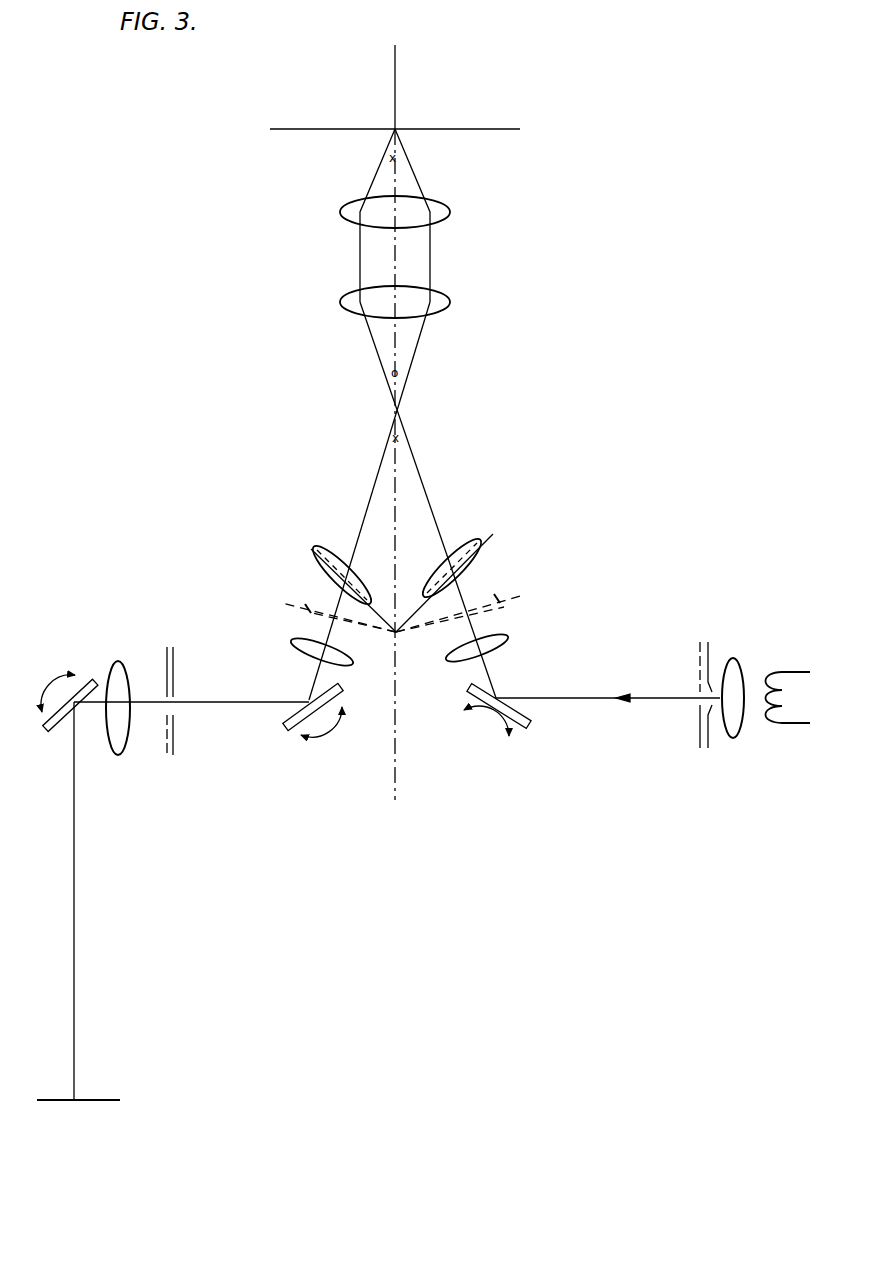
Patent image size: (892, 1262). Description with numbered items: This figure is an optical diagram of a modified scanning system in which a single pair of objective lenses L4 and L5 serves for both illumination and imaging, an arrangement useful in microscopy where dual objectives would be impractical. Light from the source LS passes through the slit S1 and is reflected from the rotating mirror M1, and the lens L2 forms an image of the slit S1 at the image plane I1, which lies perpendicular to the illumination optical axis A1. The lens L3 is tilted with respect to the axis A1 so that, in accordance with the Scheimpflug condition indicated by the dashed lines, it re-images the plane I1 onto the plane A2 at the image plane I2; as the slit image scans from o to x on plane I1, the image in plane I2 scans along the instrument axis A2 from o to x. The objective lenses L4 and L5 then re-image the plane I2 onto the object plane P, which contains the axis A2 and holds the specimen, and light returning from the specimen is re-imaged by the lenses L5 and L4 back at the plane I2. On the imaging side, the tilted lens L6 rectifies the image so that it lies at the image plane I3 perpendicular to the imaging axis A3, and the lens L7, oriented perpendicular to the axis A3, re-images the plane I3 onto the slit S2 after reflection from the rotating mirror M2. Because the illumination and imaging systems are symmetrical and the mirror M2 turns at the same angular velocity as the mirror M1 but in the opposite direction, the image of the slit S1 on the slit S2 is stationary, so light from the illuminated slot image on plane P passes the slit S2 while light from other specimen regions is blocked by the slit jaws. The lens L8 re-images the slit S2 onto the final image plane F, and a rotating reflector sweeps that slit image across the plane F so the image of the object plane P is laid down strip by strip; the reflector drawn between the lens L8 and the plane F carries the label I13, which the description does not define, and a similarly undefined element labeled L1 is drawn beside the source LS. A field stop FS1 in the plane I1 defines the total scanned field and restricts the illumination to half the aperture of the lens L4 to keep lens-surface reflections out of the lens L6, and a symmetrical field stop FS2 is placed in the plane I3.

The object plane P is at (401, 125).
The objective lens L5 is at (450, 207).
The objective lens L4 is at (450, 292).
The instrument axis A2 is at (386, 350).
The image plane I2 is at (404, 398).
The illumination optical axis A1 is at (420, 453).
The imaging axis A3 is at (362, 500).
The tilted lens L6 is at (325, 547).
The tilted lens L3 is at (482, 557).
The field stop FS2 is at (314, 598).
The field stop FS1 is at (496, 592).
The image plane I3 is at (306, 612).
The image plane I1 is at (504, 603).
The lens L7 is at (296, 635).
The lens L2 is at (514, 628).
The slit S2 is at (167, 697).
The slit S1 is at (697, 690).
The condenser lens L1 is at (742, 660).
The light source LS is at (778, 668).
The rotating mirror M2 is at (282, 720).
The rotating mirror M1 is at (531, 717).
The mirror / image I13 is at (47, 730).
The lens L8 is at (118, 752).
The final image plane F is at (102, 1095).